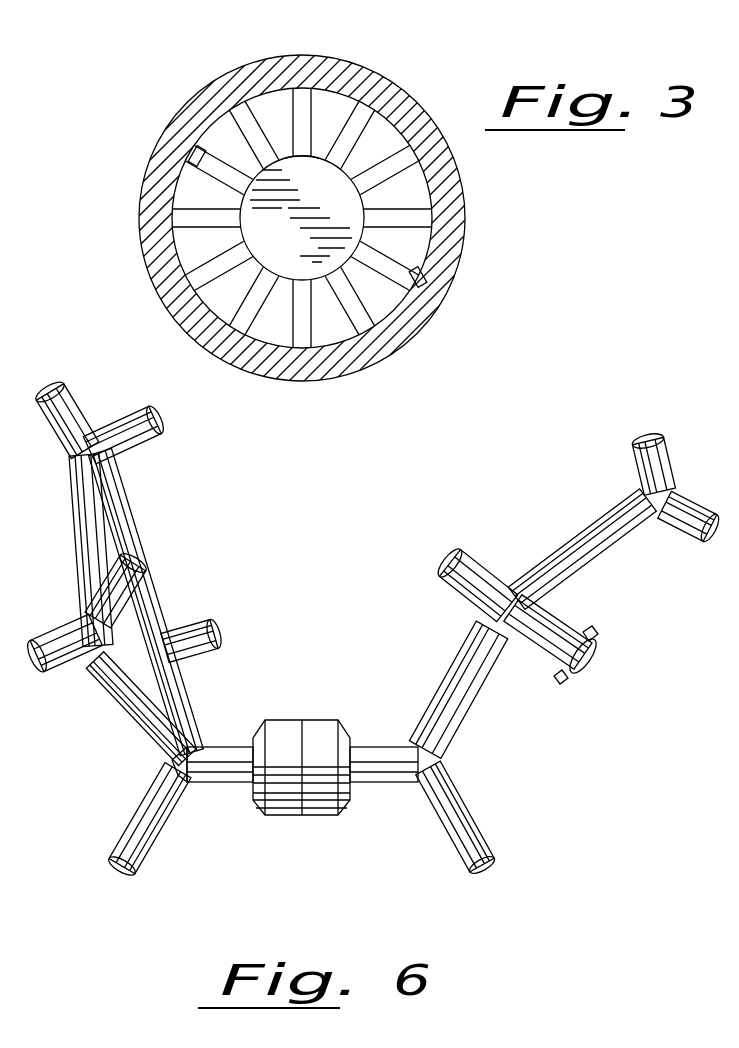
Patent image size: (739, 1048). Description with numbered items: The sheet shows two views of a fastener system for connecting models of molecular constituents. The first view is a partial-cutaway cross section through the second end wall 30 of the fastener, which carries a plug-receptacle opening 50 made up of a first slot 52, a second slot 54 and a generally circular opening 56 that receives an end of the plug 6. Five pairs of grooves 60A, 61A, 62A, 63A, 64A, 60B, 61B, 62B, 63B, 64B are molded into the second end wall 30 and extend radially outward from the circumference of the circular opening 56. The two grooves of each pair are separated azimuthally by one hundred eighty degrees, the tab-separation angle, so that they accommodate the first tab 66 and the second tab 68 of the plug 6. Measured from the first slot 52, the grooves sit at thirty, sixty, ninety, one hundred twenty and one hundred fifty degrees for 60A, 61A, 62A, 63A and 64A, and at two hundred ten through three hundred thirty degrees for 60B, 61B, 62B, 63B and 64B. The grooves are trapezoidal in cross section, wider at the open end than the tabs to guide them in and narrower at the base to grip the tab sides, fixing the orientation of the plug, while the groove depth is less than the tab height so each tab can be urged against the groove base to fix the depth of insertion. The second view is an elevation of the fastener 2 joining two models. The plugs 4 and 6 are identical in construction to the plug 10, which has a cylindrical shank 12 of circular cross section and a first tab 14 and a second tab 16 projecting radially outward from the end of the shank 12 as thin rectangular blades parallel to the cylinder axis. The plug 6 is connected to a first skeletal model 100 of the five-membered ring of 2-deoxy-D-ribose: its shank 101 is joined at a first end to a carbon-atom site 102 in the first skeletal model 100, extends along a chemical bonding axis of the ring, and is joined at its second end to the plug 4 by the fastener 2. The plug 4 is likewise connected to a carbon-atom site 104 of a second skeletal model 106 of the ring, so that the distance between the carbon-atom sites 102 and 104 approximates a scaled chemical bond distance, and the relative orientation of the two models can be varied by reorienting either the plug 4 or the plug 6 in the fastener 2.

In FIG. 3, the second end wall 30 is at (416, 201).
In FIG. 3, the plug-receptacle opening 50 is at (233, 242).
In FIG. 3, the plug 6 is at (320, 195).
In FIG. 6, the plug 6 is at (210, 747).
In FIG. 3, the circular opening 56 is at (318, 157).
In FIG. 3, the second slot 54 is at (420, 220).
In FIG. 3, the first slot 52 is at (182, 222).
In FIG. 3, the groove 60A is at (174, 152).
In FIG. 3, the groove 61A is at (238, 104).
In FIG. 3, the groove 62A is at (303, 80).
In FIG. 3, the groove 63A is at (372, 108).
In FIG. 3, the groove 64A is at (404, 152).
In FIG. 3, the groove 60B is at (398, 282).
In FIG. 3, the groove 61B is at (395, 341).
In FIG. 3, the groove 62B is at (306, 340).
In FIG. 3, the groove 63B is at (235, 341).
In FIG. 3, the groove 64B is at (184, 282).
In FIG. 3, the first tab 66 is at (193, 170).
In FIG. 3, the second tab 68 is at (428, 273).
In FIG. 6, the fastener 2 is at (289, 720).
In FIG. 6, the plug 4 is at (374, 744).
In FIG. 6, the plug 10 is at (546, 668).
In FIG. 6, the cylindrical shank 12 is at (556, 614).
In FIG. 6, the first tab 14 is at (594, 633).
In FIG. 6, the second tab 16 is at (560, 686).
In FIG. 6, the first skeletal model 100 is at (132, 497).
In FIG. 6, the shank 101 is at (226, 780).
In FIG. 6, the carbon-atom site 102 is at (162, 766).
In FIG. 6, the carbon-atom site 104 is at (480, 807).
In FIG. 6, the second skeletal model 106 is at (534, 561).